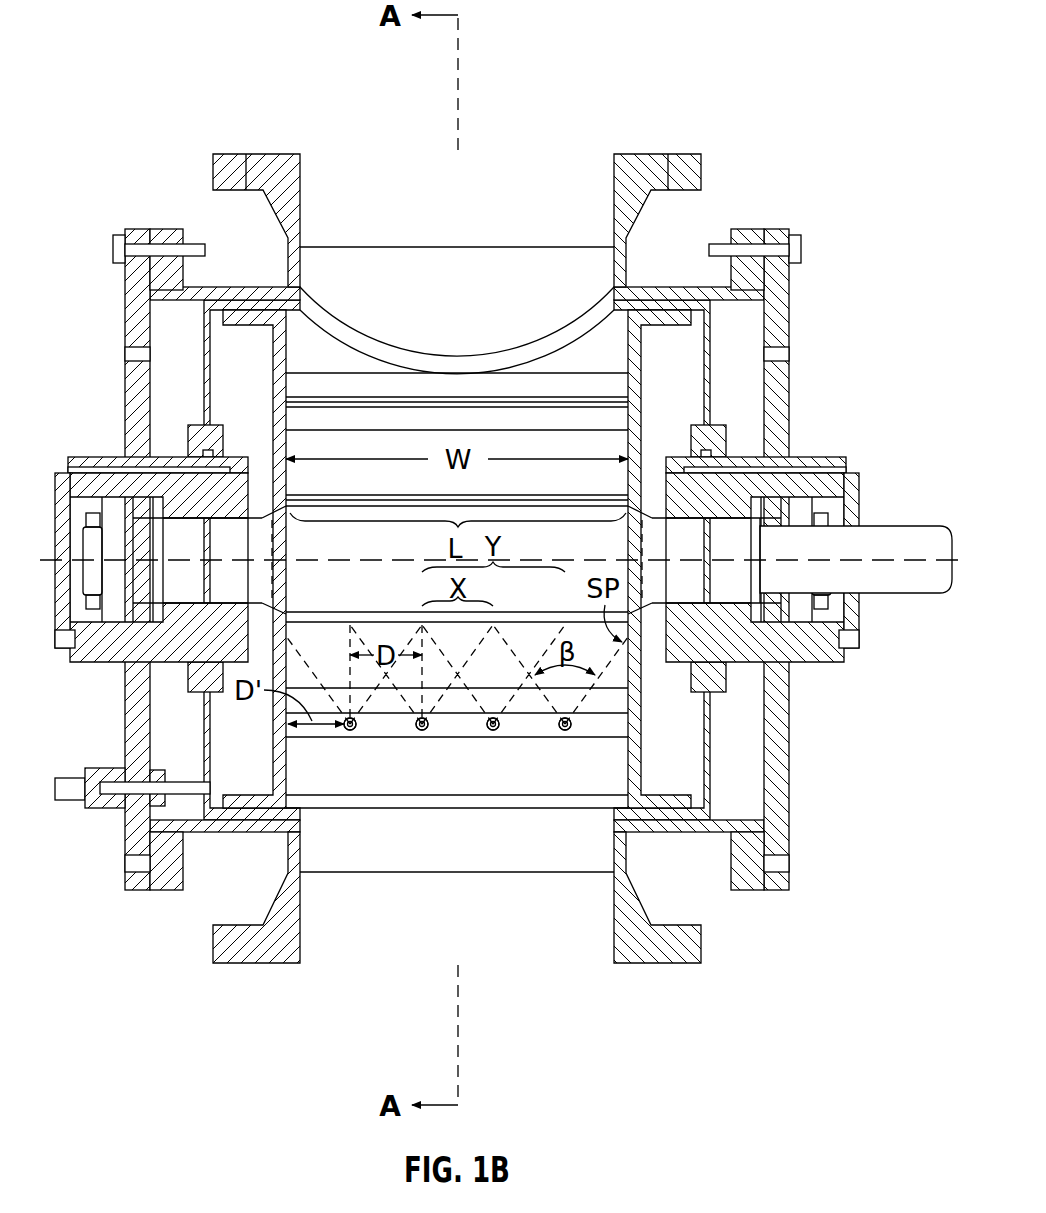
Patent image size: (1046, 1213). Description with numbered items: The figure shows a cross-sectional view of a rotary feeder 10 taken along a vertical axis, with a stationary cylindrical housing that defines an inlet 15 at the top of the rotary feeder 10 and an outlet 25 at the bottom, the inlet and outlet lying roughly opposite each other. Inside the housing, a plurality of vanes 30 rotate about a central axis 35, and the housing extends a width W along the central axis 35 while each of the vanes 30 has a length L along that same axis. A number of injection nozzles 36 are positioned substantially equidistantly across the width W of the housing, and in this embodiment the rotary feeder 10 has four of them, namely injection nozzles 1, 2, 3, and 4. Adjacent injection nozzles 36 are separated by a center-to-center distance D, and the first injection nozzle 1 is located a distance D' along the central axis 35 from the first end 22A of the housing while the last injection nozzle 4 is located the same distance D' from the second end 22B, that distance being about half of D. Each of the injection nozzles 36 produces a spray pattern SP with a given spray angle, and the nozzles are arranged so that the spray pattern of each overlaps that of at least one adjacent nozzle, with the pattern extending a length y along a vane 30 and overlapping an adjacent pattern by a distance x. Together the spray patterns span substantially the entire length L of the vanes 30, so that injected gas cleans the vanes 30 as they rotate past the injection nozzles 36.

The rotary feeder 10 is at (138, 104).
The inlet 15 is at (572, 178).
The outlet 25 is at (566, 980).
The first end of housing 22A is at (296, 787).
The second end of housing 22B is at (618, 787).
The vanes 30 is at (616, 408).
The central axis 35 is at (555, 556).
The injection nozzles 36 is at (354, 729).
The first injection nozzle 1 is at (348, 731).
The second injection nozzle 2 is at (420, 731).
The third injection nozzle 3 is at (495, 731).
The last injection nozzle 4 is at (567, 731).